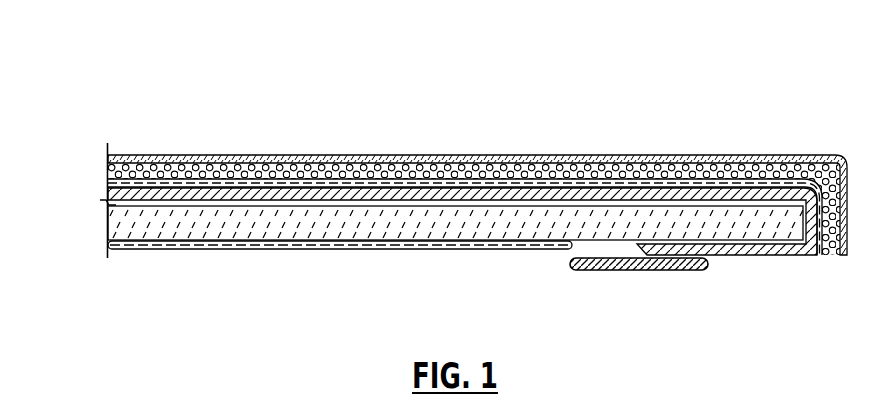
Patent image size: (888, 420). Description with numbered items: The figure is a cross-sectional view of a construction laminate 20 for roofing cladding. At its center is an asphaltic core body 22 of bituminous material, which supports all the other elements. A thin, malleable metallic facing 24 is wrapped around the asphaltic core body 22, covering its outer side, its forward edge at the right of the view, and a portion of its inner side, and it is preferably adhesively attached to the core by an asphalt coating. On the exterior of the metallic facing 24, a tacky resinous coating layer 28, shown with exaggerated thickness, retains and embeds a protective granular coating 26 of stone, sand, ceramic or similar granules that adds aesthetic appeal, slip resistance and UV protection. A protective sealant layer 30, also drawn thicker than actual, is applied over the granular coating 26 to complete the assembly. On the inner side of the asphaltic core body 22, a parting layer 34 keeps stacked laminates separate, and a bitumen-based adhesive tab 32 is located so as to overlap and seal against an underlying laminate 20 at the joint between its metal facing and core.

The construction laminate 20 is at (357, 52).
The protective sealant layer 30 is at (107, 157).
The protective granular coating 26 is at (107, 168).
The resinous coating layer 28 is at (107, 180).
The metallic facing 24 is at (100, 201).
The asphaltic core body 22 is at (107, 218).
The parting layer 34 is at (107, 242).
The adhesive tab 32 is at (570, 264).